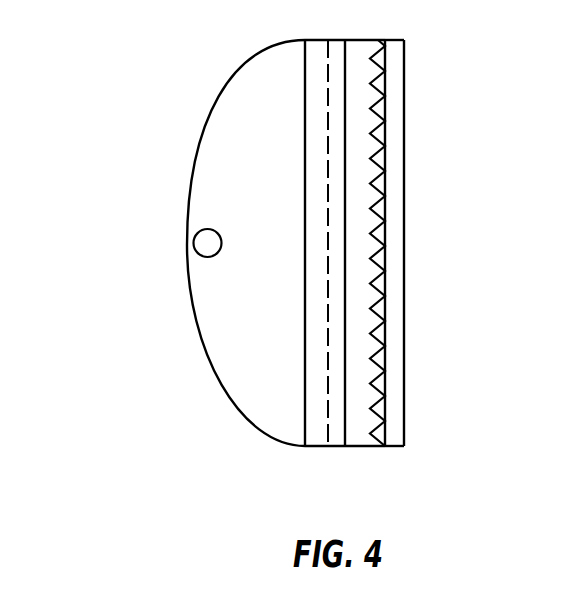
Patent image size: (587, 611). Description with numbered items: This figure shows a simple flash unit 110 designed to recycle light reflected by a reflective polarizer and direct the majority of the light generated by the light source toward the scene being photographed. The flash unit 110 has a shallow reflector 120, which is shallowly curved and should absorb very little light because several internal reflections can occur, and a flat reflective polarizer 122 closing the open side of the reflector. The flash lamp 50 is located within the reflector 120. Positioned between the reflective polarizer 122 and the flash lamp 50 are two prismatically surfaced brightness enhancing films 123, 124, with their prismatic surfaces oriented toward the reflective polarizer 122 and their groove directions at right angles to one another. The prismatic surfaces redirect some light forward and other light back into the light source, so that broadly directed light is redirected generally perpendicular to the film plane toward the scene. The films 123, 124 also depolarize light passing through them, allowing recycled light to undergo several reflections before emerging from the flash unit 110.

The flash unit 110 is at (122, 124).
The shallow reflector 120 is at (213, 243).
The flash lamp 50 is at (163, 226).
The flat reflective polarizer 122 is at (448, 243).
The prismatically surfaced brightness enhancing film 123 is at (393, 270).
The prismatically surfaced brightness enhancing film 124 is at (289, 270).